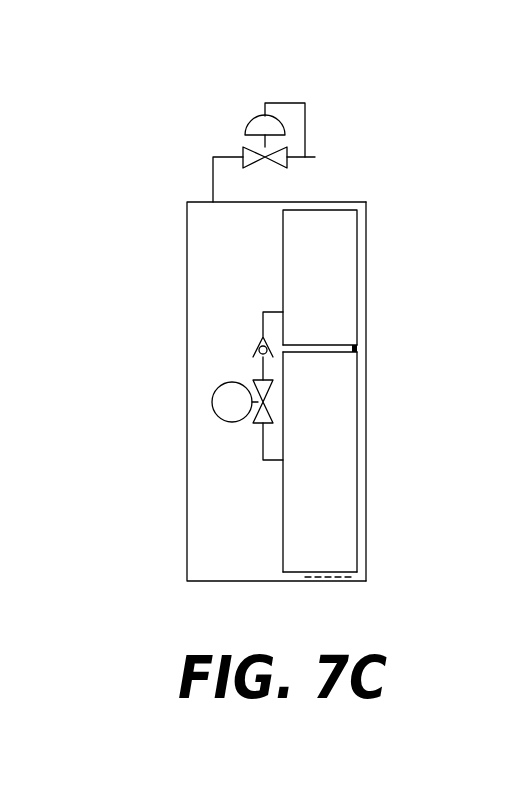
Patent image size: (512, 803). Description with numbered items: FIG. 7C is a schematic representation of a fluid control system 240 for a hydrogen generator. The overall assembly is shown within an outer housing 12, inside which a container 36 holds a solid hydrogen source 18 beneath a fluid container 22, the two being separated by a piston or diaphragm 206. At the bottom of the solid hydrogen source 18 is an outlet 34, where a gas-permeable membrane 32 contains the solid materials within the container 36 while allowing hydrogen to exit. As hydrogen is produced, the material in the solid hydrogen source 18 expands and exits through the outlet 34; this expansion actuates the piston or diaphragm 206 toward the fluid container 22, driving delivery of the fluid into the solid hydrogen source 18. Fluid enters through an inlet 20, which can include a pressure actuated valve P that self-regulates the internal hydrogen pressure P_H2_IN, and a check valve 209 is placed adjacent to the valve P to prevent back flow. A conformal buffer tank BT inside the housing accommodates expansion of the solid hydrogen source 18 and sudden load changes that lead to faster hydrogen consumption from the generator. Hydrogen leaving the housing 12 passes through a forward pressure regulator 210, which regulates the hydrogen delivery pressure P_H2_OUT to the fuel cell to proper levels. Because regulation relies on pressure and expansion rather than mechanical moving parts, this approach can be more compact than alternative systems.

The hydrogen storage system 240 is at (148, 190).
The forward pressure regulator 210 is at (281, 85).
The outer housing / tank 12 is at (367, 248).
The fluid container 22 is at (358, 288).
The piston or diaphragm 206 is at (360, 348).
The check valve 209 is at (254, 348).
The container 36 is at (366, 409).
The solid hydrogen source 18 is at (348, 468).
The inlet 20 is at (263, 448).
The outlet 34 is at (323, 571).
The gas-permeable membrane 32 is at (323, 579).